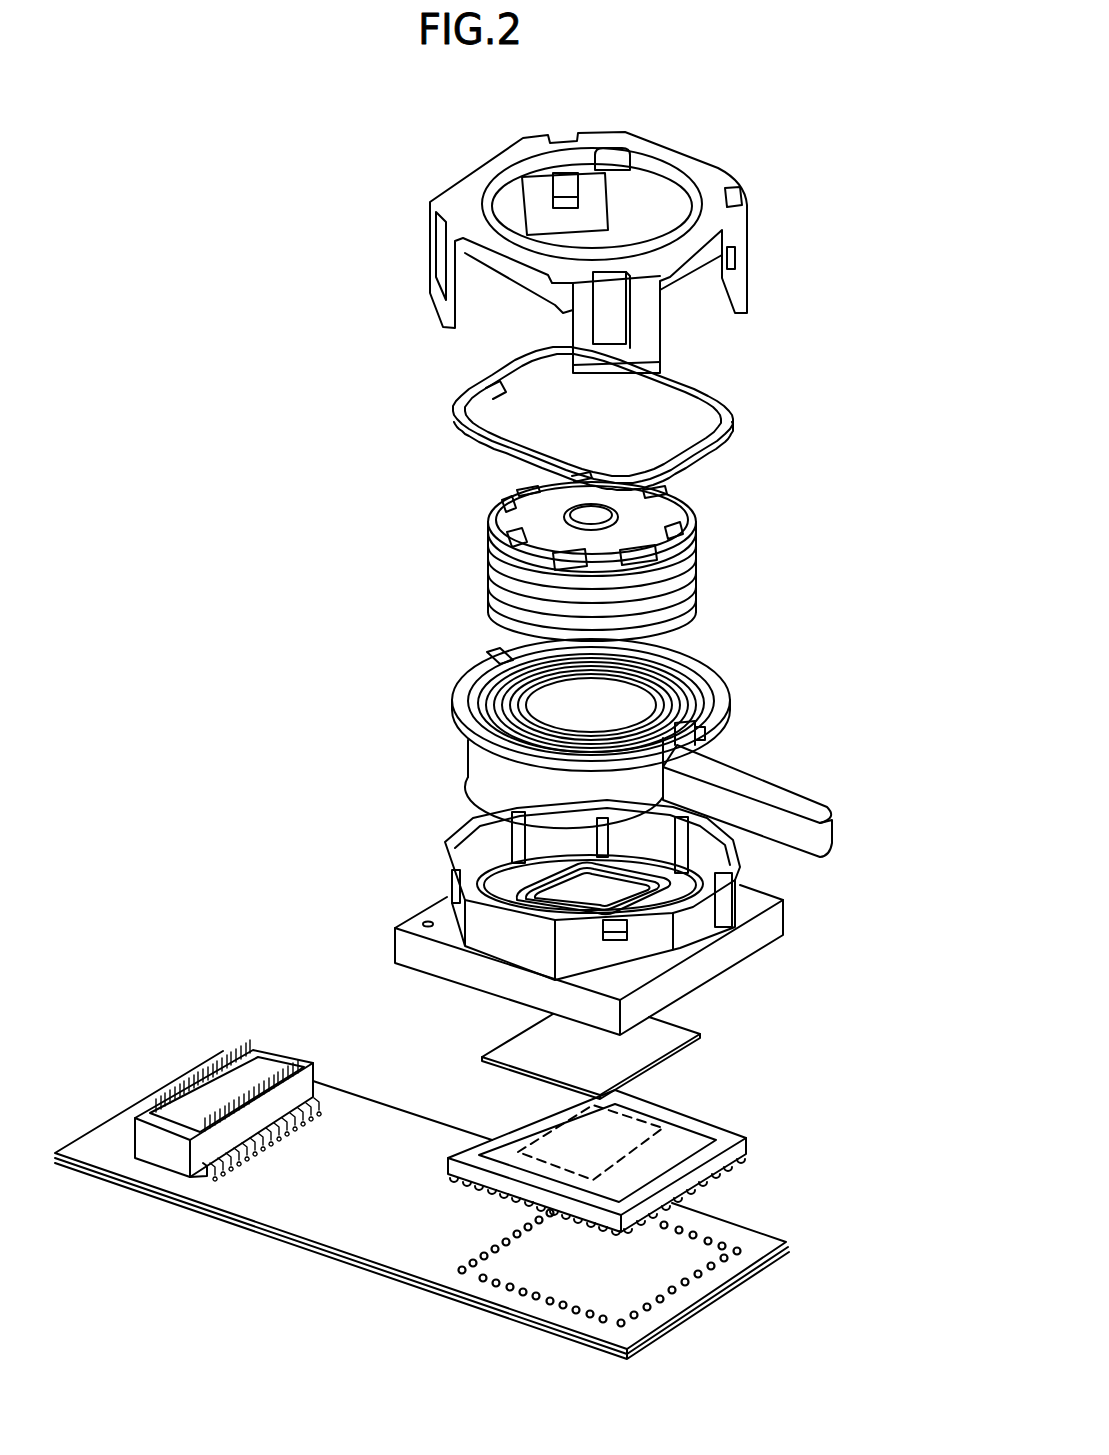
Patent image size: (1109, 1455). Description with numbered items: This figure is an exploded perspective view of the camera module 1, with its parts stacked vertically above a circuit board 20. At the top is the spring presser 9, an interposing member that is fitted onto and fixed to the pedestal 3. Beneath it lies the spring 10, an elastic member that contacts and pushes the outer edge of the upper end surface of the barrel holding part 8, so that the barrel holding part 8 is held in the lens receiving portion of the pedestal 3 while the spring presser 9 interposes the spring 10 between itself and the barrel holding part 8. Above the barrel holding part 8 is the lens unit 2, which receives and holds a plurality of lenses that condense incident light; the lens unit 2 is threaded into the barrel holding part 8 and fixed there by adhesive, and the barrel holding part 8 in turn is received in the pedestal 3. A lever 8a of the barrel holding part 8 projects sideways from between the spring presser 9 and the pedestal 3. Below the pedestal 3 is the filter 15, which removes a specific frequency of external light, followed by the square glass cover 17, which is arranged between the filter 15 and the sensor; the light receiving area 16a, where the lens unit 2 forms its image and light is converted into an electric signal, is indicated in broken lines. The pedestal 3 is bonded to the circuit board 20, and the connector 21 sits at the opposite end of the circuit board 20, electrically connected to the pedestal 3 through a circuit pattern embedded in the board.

The camera module 1 is at (312, 226).
The lens unit 2 is at (680, 504).
The pedestal 3 is at (773, 925).
The barrel holding part 8 is at (669, 725).
The lever 8a is at (768, 797).
The spring presser 9 is at (697, 175).
The spring 10 is at (707, 392).
The filter 15 is at (688, 1025).
The light receiving area 16a is at (627, 1142).
The glass cover 17 is at (662, 1139).
The circuit board 20 is at (330, 1217).
The connector 21 is at (267, 1050).